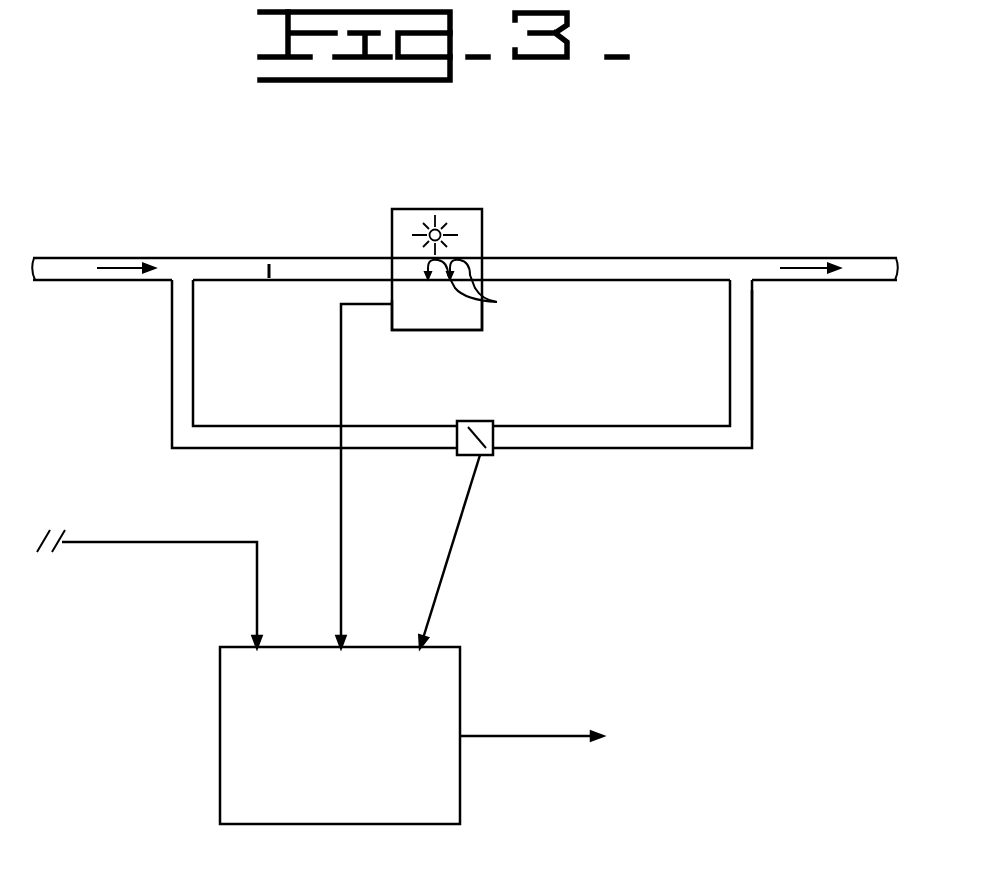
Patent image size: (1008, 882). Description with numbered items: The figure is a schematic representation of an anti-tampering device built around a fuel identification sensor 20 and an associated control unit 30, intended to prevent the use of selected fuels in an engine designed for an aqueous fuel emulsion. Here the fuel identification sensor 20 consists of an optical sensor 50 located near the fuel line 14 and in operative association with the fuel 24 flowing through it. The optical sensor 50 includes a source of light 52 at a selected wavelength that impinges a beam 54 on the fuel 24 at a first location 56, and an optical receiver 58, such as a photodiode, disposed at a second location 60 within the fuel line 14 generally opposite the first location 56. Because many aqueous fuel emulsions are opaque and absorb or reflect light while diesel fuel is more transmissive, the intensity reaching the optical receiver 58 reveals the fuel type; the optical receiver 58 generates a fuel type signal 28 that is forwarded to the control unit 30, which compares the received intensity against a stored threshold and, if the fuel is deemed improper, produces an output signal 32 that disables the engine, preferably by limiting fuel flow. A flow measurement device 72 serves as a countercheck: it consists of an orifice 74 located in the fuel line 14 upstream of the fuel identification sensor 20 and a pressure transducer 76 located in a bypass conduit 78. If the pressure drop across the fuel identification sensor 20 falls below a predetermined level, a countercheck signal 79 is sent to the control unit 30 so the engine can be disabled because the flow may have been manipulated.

The fuel line 14 is at (713, 258).
The fuel identification sensor 20 is at (207, 148).
The fuel 24 is at (468, 268).
The fuel type signal 28 is at (341, 388).
The control unit 30 is at (348, 796).
The output signal 32 is at (520, 736).
The optical sensor 50 is at (488, 183).
The source of light 52 is at (405, 209).
The beam 54 is at (497, 302).
The first location 56 is at (365, 255).
The optical receiver 58 is at (437, 330).
The second location 60 is at (370, 287).
The flow measurement device 72 is at (135, 432).
The orifice 74 is at (266, 262).
The pressure transducer 76 is at (493, 422).
The bypass conduit 78 is at (753, 383).
The countercheck signal 79 is at (462, 520).